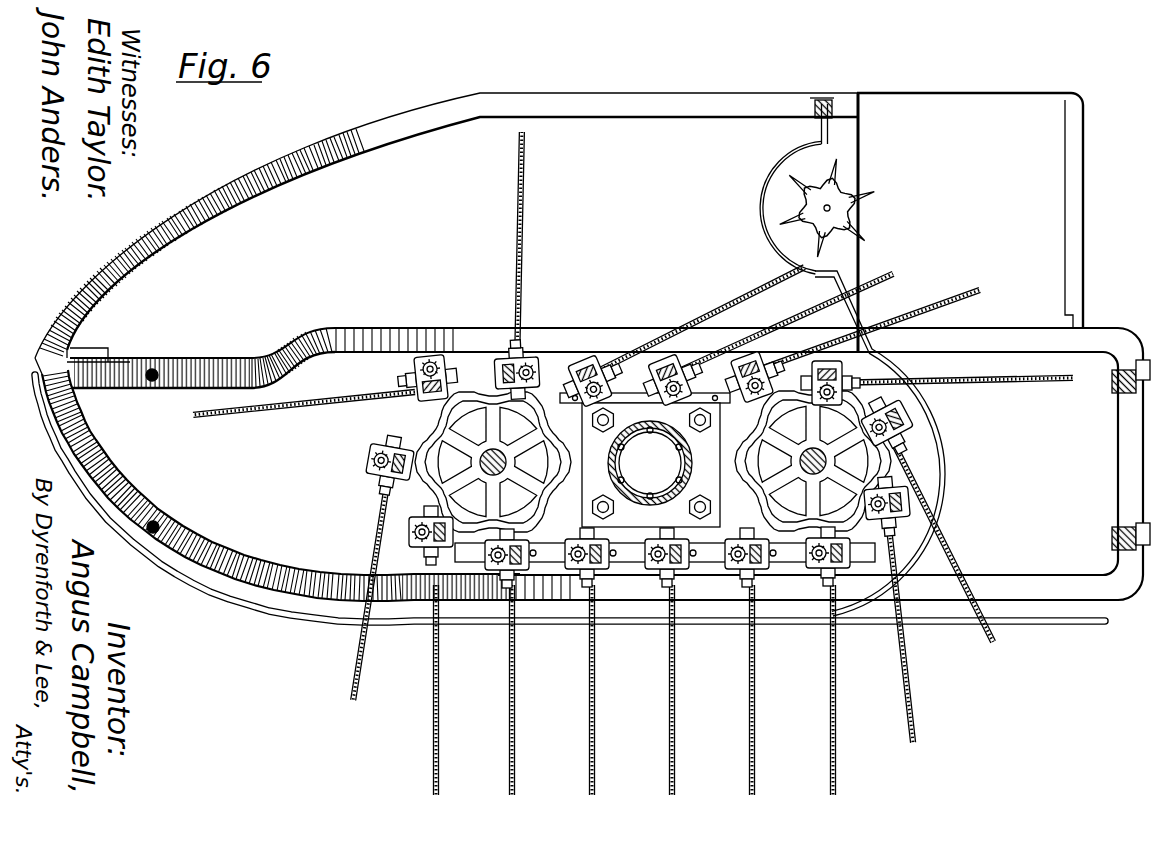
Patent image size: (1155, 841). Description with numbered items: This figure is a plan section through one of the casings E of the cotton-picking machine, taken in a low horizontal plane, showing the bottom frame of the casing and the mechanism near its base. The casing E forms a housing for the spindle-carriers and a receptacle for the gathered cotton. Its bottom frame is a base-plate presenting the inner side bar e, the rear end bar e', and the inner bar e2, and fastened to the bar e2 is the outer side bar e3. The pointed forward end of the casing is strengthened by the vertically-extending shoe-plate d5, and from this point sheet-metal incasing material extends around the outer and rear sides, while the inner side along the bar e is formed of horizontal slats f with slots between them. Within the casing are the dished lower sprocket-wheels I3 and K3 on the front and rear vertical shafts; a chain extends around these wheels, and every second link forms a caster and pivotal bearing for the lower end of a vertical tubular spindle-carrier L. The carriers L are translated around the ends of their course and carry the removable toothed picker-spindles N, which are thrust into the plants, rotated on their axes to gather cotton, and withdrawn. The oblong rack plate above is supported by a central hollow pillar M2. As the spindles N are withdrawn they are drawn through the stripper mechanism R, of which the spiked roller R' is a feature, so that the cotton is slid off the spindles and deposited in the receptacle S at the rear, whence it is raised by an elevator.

The inner side bar e is at (307, 485).
The rear end bar e' is at (742, 464).
The inner bar e2 is at (390, 343).
The outer side bar e3 is at (384, 124).
The casing E is at (663, 187).
The receptacle S is at (970, 222).
The stripper mechanism R is at (888, 434).
The spiked roller R' is at (828, 186).
The spindle-carrier L is at (530, 367).
The lower sprocket-wheel I3 is at (418, 402).
The lower sprocket-wheel K3 is at (885, 471).
The central hollow pillar M2 is at (651, 465).
The picker-spindle N is at (589, 713).
The horizontal slats f is at (404, 627).
The shoe-plate d5 is at (68, 356).